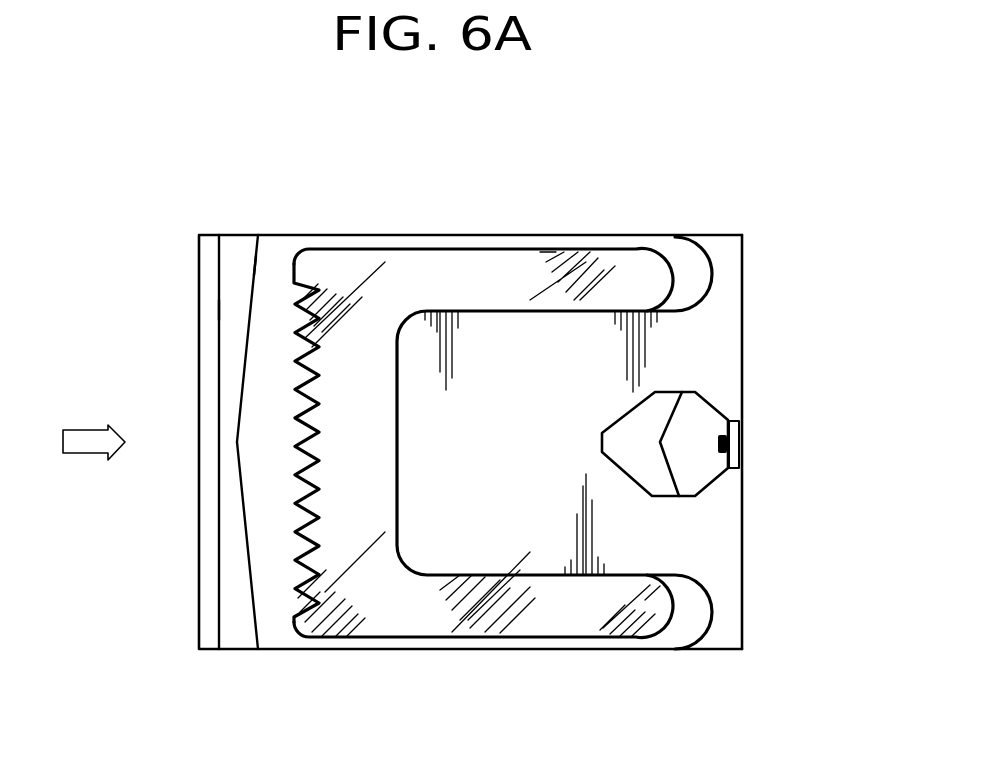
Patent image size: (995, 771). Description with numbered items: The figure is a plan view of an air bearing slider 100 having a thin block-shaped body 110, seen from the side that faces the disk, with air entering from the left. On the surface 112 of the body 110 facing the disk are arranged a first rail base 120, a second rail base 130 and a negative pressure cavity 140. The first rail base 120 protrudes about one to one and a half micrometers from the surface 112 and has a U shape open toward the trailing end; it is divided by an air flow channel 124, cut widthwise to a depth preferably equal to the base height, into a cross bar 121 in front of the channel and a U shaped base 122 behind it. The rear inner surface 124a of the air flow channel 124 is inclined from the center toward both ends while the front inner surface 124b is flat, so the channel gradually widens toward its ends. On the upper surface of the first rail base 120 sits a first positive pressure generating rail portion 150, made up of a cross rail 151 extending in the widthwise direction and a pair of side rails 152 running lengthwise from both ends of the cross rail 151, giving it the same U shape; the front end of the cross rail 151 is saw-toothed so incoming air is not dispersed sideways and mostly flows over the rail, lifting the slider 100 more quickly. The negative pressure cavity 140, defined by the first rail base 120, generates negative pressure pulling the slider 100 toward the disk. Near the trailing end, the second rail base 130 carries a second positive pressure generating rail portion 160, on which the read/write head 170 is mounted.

The air bearing slider 100 is at (367, 197).
The body 110 is at (745, 303).
The surface of the body facing the disk 112 is at (735, 352).
The first rail base 120 is at (248, 708).
The cross bar 121 is at (203, 632).
The U shaped base 122 is at (273, 640).
The air flow channel 124 is at (233, 247).
The rear inner surface of the air flow channel 124a is at (257, 257).
The front inner surface of the air flow channel 124b is at (219, 303).
The second rail base 130 is at (648, 480).
The negative pressure cavity 140 is at (506, 453).
The first positive pressure generating rail portion 150 is at (397, 187).
The cross rail 151 is at (348, 352).
The side rails 152 is at (530, 265).
The second positive pressure generating rail portion 160 is at (705, 422).
The read/write head 170 is at (727, 448).